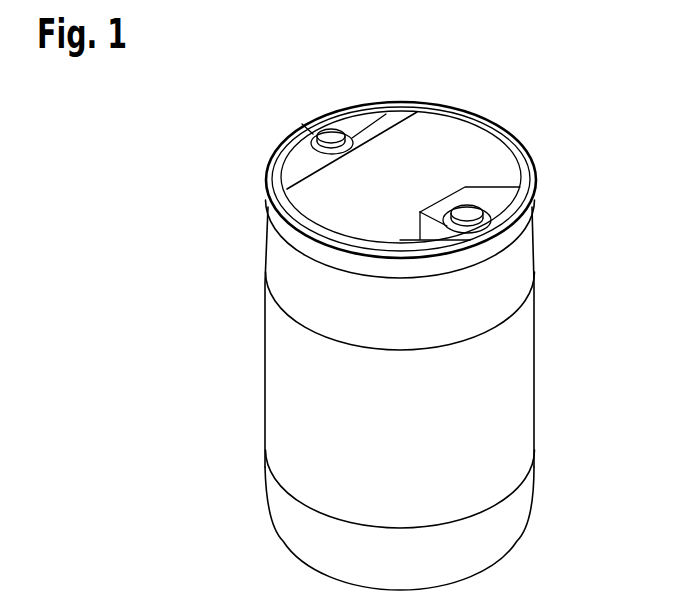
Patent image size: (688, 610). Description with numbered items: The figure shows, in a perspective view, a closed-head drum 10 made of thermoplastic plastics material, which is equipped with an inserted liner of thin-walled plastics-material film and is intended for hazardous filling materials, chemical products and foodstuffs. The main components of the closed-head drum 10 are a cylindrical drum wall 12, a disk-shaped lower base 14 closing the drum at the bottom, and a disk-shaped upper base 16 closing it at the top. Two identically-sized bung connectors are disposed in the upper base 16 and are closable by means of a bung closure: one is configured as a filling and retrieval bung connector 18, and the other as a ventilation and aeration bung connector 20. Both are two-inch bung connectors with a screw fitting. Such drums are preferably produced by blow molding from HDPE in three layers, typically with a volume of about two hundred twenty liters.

The closed-head drum 10 is at (192, 251).
The cylindrical drum wall 12 is at (495, 422).
The lower base 14 is at (485, 572).
The upper base 16 is at (455, 148).
The filling and retrieval bung connector 18 is at (328, 142).
The ventilation and aeration bung connector 20 is at (468, 213).